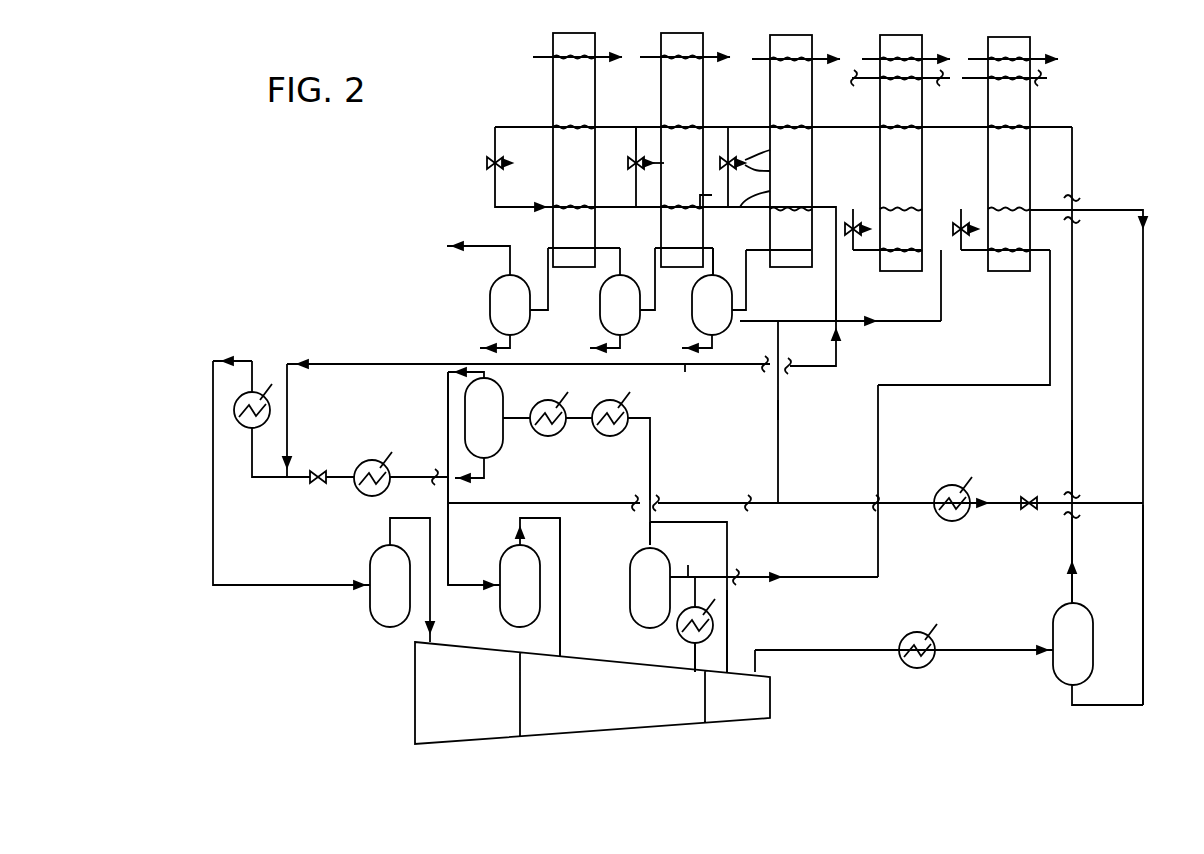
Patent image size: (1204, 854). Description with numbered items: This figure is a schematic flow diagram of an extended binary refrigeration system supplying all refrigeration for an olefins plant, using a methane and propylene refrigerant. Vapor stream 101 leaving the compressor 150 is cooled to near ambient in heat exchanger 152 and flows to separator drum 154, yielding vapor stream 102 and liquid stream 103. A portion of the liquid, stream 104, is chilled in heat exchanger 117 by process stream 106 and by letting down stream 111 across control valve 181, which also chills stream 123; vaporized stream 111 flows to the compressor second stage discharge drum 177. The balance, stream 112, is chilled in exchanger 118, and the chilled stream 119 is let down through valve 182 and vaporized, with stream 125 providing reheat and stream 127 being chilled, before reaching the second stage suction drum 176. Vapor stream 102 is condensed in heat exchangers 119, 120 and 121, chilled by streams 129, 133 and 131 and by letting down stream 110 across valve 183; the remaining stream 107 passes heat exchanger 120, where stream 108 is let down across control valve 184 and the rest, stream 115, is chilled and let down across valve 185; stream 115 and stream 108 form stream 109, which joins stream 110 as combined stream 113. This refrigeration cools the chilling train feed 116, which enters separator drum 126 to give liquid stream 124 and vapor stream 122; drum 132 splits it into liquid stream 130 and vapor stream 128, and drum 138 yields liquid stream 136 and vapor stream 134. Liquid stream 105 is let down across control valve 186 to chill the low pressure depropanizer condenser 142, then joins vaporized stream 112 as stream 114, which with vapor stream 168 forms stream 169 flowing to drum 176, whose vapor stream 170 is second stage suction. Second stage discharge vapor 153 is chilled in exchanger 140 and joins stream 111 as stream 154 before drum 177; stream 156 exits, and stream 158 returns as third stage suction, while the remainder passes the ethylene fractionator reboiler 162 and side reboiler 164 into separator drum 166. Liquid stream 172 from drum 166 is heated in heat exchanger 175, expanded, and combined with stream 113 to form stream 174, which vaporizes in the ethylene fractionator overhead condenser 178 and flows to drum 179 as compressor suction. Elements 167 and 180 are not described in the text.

The vapor stream 101 is at (838, 650).
The vapor stream 102 is at (1072, 548).
The liquid stream 103 is at (1144, 555).
The stream 104 is at (1106, 210).
The liquid stream 105 is at (1090, 501).
The process stream 106 is at (970, 56).
The stream 107 is at (727, 128).
The stream 108 is at (621, 162).
The stream 109 is at (690, 196).
The stream 110 is at (775, 150).
The stream 111 is at (817, 575).
The stream 112 is at (778, 410).
The combined stream 113 is at (688, 400).
The stream 114 is at (752, 498).
The stream 115 is at (636, 126).
The chilling train feed 116 is at (819, 302).
The heat exchanger 117 is at (997, 104).
The exchanger 118 is at (889, 104).
The heat exchanger 119 is at (779, 104).
The heat exchanger 120 is at (670, 104).
The heat exchanger 121 is at (562, 104).
The vapor stream 122 is at (720, 258).
The stream 123 is at (1044, 79).
The liquid stream 124 is at (720, 346).
The stream 125 is at (860, 56).
The separator drum 126 is at (615, 247).
The process stream 127 is at (860, 79).
The vapor stream 128 is at (700, 309).
The stream 129 is at (754, 56).
The liquid stream 130 is at (628, 346).
The stream 131 is at (534, 54).
The separator drum 132 is at (608, 309).
The stream 133 is at (644, 54).
The vapor stream 134 is at (476, 250).
The liquid stream 136 is at (498, 309).
The separator drum 138 is at (517, 346).
The exchanger 140 is at (727, 646).
The low pressure depropanizer condenser 142 is at (953, 521).
The compressor 150 is at (415, 690).
The heat exchanger 152 is at (918, 668).
The second stage discharge vapor 153 is at (686, 666).
The separator drum 154 is at (1060, 647).
The stream 156 is at (648, 541).
The stream 158 is at (727, 610).
The ethylene fractionator reboiler 162 is at (610, 436).
The ethylene fractionator side reboiler 164 is at (548, 436).
The separator drum 166 is at (472, 418).
The valve 167 is at (318, 468).
The vapor stream 168 is at (446, 393).
The stream 169 is at (448, 542).
The vapor stream 170 is at (561, 588).
The liquid stream 172 is at (420, 474).
The stream 174 is at (265, 480).
The heat exchanger 175 is at (372, 460).
The compressor second stage suction drum 176 is at (508, 589).
The compressor second stage discharge drum 177 is at (638, 592).
The ethylene fractionator overhead condenser 178 is at (256, 392).
The drum 179 is at (378, 589).
The stream 180 is at (652, 453).
The control valve 181 is at (1009, 237).
The valve 182 is at (901, 237).
The valve 183 is at (775, 169).
The control valve 184 is at (678, 163).
The valve 185 is at (514, 162).
The control valve 186 is at (1028, 495).